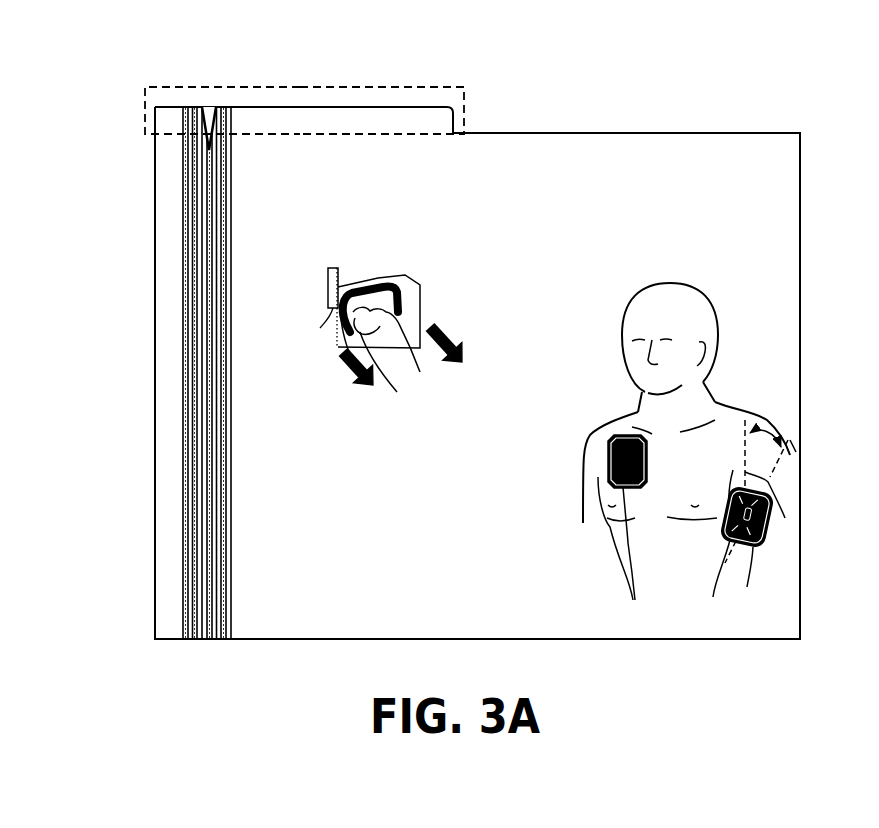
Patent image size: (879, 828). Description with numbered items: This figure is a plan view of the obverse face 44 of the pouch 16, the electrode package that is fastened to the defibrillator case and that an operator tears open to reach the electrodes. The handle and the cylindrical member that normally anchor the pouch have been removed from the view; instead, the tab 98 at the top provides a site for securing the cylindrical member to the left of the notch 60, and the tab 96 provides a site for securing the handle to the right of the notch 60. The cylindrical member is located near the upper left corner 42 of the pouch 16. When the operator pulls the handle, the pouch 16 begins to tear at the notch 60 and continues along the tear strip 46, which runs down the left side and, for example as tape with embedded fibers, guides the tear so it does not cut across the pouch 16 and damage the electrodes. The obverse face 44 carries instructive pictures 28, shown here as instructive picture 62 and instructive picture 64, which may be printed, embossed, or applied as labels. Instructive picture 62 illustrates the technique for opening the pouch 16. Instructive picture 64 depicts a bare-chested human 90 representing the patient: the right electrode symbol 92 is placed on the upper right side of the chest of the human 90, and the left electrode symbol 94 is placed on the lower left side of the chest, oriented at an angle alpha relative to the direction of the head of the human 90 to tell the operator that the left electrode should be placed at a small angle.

The pouch 16 is at (803, 197).
The instructive pictures 28 is at (757, 176).
The upper left corner 42 is at (150, 130).
The obverse face 44 is at (697, 150).
The tear strip 46 is at (200, 605).
The notch 60 is at (210, 100).
The instructive picture 62 is at (410, 388).
The instructive picture 64 is at (685, 441).
The bare-chested human figure 90 is at (705, 383).
The right electrode symbol 92 is at (648, 458).
The left electrode symbol 94 is at (753, 543).
The tab 96 is at (466, 93).
The tab 98 is at (145, 100).